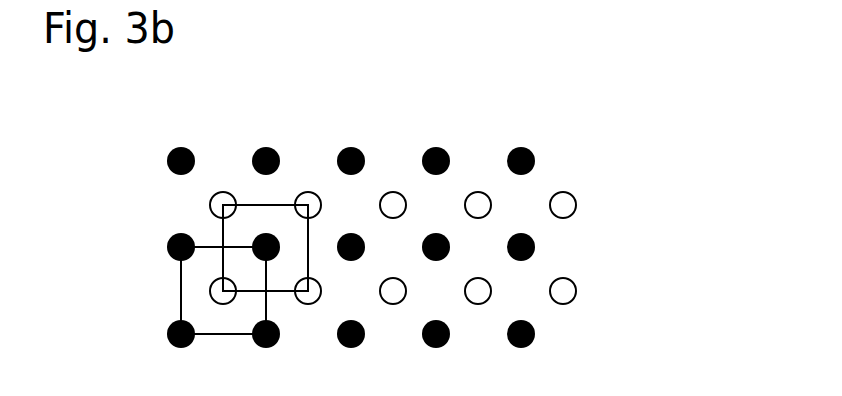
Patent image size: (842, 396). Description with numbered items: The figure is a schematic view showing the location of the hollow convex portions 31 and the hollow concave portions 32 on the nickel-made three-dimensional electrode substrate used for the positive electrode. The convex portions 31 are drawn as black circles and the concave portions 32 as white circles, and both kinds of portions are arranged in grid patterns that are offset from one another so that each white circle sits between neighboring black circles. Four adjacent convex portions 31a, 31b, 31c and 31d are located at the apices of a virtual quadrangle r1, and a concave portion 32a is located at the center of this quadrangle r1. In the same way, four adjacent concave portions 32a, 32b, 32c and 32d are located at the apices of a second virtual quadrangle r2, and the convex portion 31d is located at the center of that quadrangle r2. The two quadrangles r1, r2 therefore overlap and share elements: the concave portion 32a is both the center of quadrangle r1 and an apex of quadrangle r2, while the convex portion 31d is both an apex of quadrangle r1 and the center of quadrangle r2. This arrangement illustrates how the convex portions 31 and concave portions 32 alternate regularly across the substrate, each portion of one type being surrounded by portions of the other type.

The hollow convex portions 31 is at (510, 340).
The convex portion 31a is at (169, 246).
The convex portion 31b is at (169, 334).
The convex portion 31c is at (268, 348).
The convex portion 31d is at (279, 242).
The hollow concave portions 32 is at (563, 305).
The concave portion 32a is at (224, 304).
The concave portion 32b is at (308, 304).
The concave portion 32c is at (310, 196).
The concave portion 32d is at (225, 196).
The virtual quadrangle r1 is at (181, 298).
The virtual quadrangle r2 is at (223, 236).